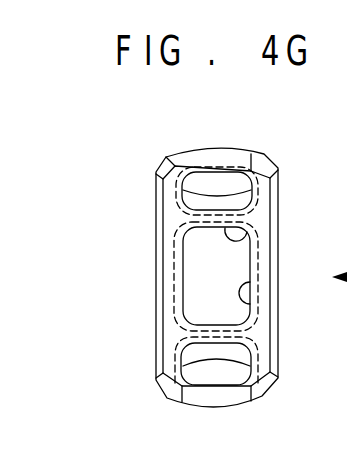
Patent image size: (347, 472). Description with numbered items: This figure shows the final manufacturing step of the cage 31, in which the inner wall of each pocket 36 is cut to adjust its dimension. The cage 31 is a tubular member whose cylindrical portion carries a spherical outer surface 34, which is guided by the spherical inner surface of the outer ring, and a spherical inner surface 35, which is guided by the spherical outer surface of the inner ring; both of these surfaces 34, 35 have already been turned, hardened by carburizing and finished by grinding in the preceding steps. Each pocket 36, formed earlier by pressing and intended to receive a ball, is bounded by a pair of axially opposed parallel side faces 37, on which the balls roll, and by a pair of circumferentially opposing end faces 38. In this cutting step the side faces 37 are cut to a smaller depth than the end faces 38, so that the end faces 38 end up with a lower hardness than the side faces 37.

The cage 31 is at (163, 153).
The spherical outer surface 34 is at (180, 390).
The spherical inner surface 35 is at (168, 373).
The pocket 36 is at (223, 156).
The side face 37 is at (252, 301).
The end face 38 is at (248, 236).